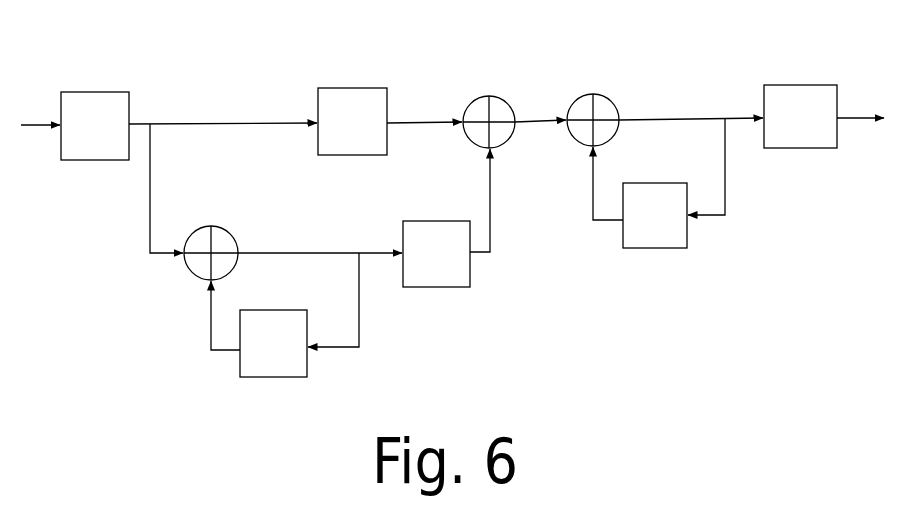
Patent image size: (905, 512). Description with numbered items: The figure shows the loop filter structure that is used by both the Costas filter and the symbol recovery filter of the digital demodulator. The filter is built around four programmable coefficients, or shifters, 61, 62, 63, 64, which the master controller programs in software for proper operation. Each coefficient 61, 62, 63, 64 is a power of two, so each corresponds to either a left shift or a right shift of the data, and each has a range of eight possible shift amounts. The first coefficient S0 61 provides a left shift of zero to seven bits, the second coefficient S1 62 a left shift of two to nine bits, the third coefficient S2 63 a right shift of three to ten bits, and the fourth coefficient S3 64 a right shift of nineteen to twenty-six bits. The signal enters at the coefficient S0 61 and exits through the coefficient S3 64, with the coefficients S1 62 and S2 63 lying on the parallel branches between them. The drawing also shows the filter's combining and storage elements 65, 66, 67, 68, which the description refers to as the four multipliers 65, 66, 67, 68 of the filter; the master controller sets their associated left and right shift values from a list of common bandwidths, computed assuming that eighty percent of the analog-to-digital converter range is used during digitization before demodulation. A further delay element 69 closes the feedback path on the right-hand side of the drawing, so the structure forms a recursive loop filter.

The coefficient S0 61 is at (103, 92).
The coefficient S1 62 is at (367, 88).
The coefficient S2 63 is at (418, 221).
The coefficient S3 64 is at (787, 85).
The multiplier 65 is at (225, 230).
The multiplier 66 is at (497, 97).
The multiplier 67 is at (601, 96).
The multiplier 68 is at (272, 310).
The second delay element z^-1 69 is at (650, 183).